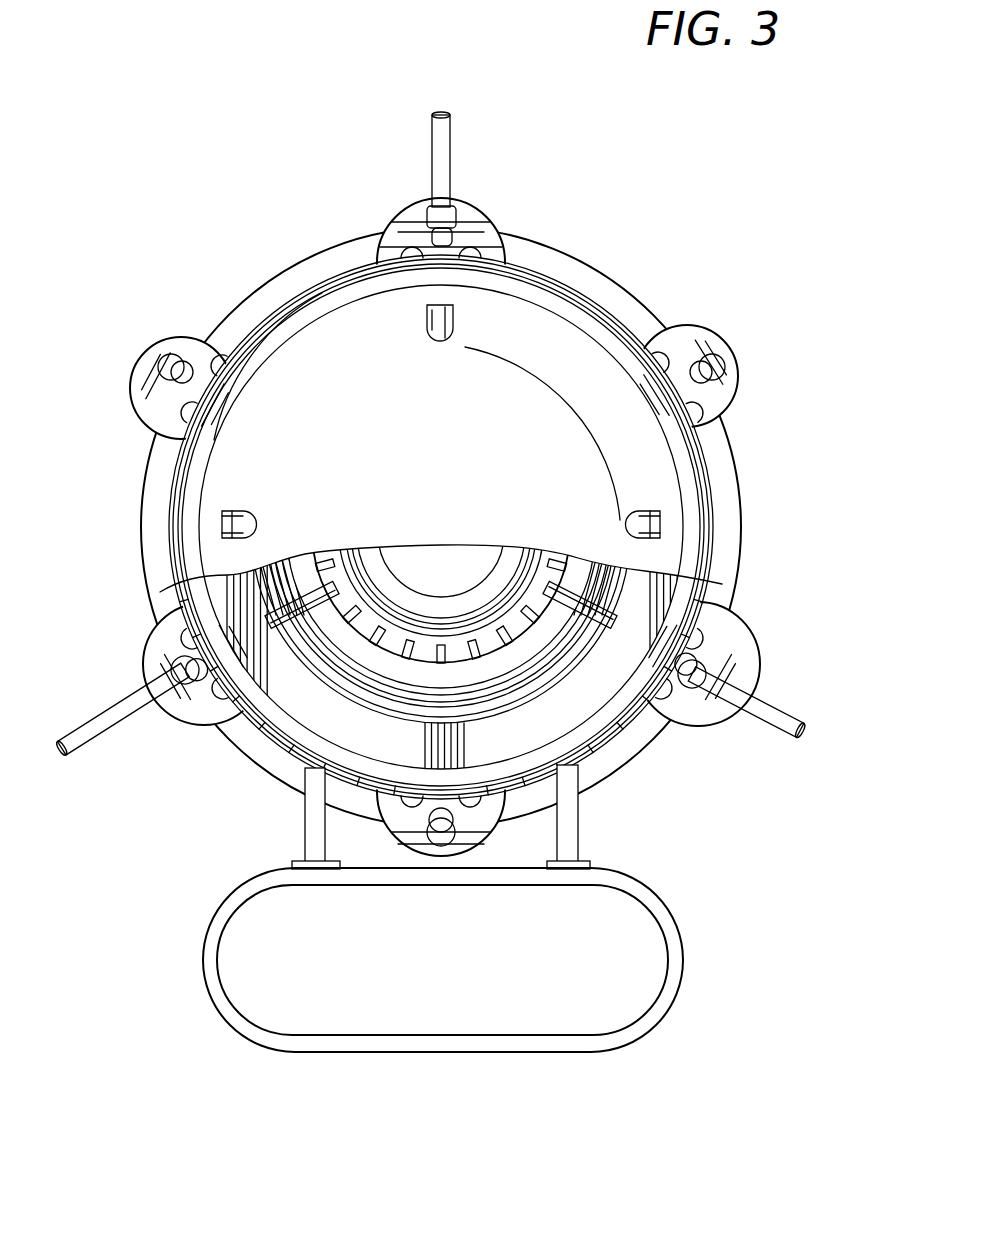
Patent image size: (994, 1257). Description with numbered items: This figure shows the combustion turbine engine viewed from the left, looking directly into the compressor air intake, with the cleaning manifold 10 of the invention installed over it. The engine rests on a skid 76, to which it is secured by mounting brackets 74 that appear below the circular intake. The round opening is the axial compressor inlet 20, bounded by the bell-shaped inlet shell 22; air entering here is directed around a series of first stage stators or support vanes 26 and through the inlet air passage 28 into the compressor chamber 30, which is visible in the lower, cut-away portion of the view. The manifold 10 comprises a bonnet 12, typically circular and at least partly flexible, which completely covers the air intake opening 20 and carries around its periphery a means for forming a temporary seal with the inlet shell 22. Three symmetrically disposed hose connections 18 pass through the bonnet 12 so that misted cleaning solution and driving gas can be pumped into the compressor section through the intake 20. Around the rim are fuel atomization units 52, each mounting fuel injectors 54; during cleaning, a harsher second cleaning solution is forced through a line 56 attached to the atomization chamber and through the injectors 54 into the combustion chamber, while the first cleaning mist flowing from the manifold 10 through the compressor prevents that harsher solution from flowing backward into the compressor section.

The manifold 10 is at (328, 336).
The bonnet 12 is at (548, 318).
The hose connections 18 is at (440, 343).
The axial compressor inlet 20 is at (520, 668).
The inlet shell 22 is at (285, 720).
The support vanes 26 is at (300, 575).
The inlet air passage 28 is at (515, 560).
The compressor chamber 30 is at (385, 652).
The fuel atomization unit 52 is at (407, 208).
The fuel injectors 54 is at (176, 362).
The line 56 is at (455, 148).
The mounting brackets 74 is at (583, 826).
The skid 76 is at (205, 960).